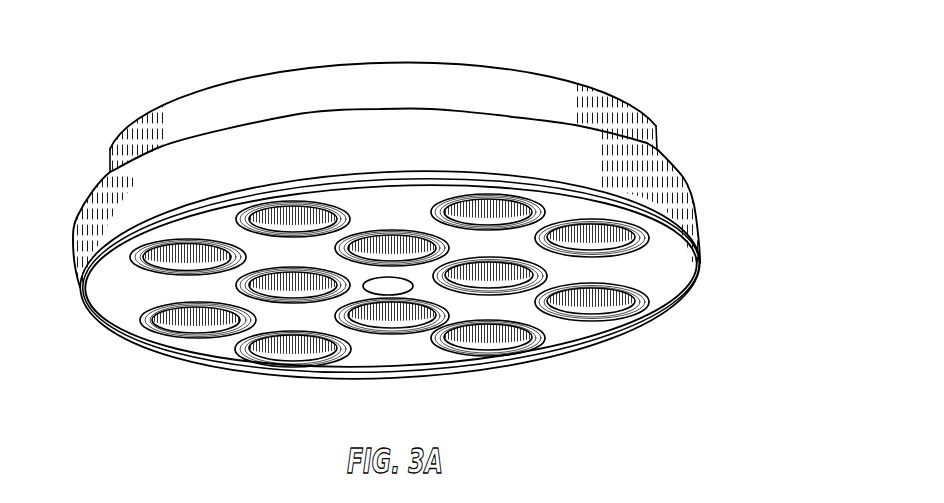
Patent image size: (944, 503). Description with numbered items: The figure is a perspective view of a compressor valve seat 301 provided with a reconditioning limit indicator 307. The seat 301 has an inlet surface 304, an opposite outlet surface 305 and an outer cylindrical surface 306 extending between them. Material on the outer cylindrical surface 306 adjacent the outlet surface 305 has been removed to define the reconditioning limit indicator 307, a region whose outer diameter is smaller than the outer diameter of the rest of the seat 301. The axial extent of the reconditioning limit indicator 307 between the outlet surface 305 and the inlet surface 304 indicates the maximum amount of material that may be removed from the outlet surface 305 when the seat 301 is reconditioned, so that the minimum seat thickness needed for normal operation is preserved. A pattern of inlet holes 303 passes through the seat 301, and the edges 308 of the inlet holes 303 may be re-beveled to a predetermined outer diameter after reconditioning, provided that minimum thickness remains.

The seat 301 is at (703, 68).
The inlet holes 303 is at (601, 297).
The inlet surface 304 is at (201, 91).
The outlet surface 305 is at (403, 358).
The outer cylindrical surface 306 is at (677, 178).
The reconditioning limit indicator 307 is at (673, 228).
The edges 308 is at (152, 325).